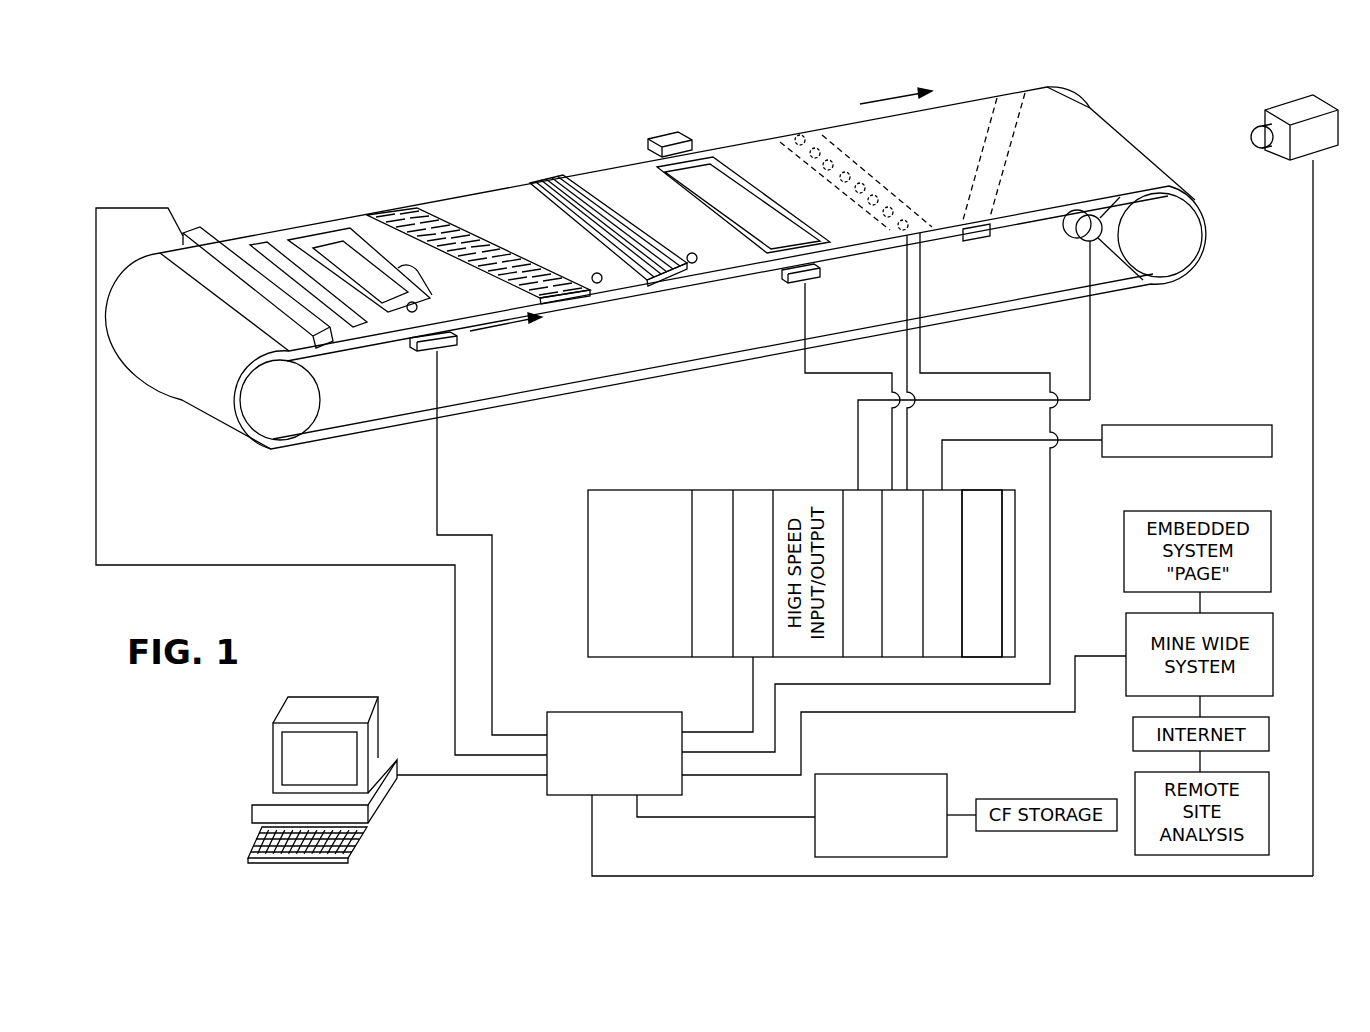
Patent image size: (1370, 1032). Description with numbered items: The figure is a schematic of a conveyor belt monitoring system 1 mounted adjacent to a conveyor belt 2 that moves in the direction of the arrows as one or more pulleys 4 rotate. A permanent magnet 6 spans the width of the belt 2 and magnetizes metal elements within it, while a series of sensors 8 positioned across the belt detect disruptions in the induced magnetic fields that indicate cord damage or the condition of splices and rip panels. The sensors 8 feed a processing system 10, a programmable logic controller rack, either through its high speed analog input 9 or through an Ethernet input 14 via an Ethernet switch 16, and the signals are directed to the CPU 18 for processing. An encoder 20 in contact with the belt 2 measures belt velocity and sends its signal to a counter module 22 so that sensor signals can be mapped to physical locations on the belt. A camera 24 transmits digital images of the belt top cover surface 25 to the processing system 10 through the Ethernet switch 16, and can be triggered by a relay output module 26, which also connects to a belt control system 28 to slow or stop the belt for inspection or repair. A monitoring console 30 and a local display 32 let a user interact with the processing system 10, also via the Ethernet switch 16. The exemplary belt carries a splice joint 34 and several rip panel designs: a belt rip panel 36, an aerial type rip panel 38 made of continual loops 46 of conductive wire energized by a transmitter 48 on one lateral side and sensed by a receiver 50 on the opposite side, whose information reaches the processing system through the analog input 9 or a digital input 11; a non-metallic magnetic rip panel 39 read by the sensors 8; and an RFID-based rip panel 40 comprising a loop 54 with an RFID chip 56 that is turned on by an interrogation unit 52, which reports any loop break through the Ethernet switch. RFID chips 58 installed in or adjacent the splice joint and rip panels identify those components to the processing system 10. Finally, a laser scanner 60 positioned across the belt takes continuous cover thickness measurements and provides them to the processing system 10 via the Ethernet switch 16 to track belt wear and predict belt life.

The conveyor belt monitoring system 1 is at (172, 160).
The conveyor belt 2 is at (475, 188).
The pulleys 4 is at (280, 412).
The permanent magnet 6 is at (1017, 128).
The sensors 8 is at (798, 130).
The high speed analog input 9 is at (890, 496).
The processing system 10 is at (568, 491).
The digital input 11 is at (990, 567).
The Ethernet input 14 is at (753, 496).
The Ethernet switch 16 is at (568, 796).
The CPU 18 is at (708, 496).
The encoder 20 is at (1081, 242).
The counter module 22 is at (850, 496).
The camera 24 is at (1322, 160).
The conveyor belt top cover surface 25 is at (1107, 137).
The relay output module 26 is at (950, 490).
The belt control system 28 is at (1243, 425).
The monitoring console 30 is at (327, 706).
The local display 32 is at (878, 772).
The splice joint 34 is at (393, 214).
The belt rip panel 36 is at (545, 184).
The aerial type rip panel 38 is at (730, 224).
The non-metallic magnetic rip panel 39 is at (258, 243).
The RFID-based rip panel 40 is at (322, 238).
The loops 46 is at (684, 187).
The transmitter 48 is at (822, 275).
The receiver 50 is at (668, 136).
The interrogation unit 52 is at (428, 351).
The loop 54 is at (413, 270).
The RFID chip 56 is at (409, 312).
The RFID chips 58 is at (600, 284).
The laser scanner 60 is at (197, 230).